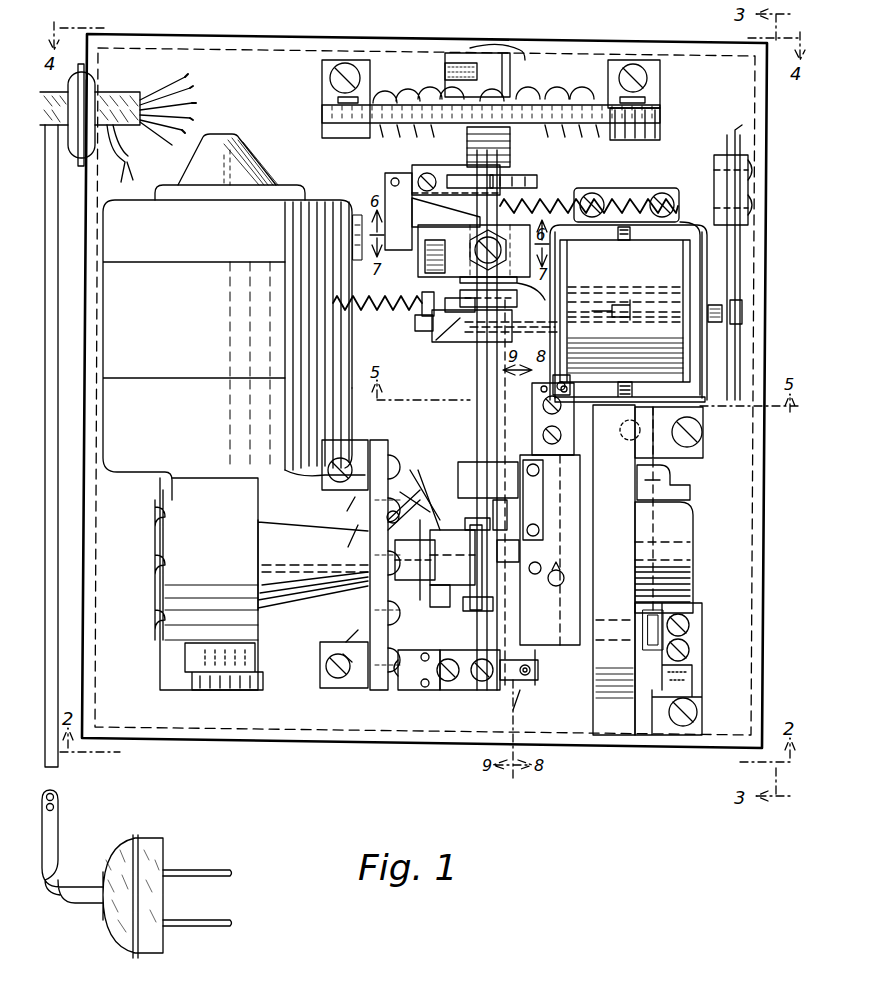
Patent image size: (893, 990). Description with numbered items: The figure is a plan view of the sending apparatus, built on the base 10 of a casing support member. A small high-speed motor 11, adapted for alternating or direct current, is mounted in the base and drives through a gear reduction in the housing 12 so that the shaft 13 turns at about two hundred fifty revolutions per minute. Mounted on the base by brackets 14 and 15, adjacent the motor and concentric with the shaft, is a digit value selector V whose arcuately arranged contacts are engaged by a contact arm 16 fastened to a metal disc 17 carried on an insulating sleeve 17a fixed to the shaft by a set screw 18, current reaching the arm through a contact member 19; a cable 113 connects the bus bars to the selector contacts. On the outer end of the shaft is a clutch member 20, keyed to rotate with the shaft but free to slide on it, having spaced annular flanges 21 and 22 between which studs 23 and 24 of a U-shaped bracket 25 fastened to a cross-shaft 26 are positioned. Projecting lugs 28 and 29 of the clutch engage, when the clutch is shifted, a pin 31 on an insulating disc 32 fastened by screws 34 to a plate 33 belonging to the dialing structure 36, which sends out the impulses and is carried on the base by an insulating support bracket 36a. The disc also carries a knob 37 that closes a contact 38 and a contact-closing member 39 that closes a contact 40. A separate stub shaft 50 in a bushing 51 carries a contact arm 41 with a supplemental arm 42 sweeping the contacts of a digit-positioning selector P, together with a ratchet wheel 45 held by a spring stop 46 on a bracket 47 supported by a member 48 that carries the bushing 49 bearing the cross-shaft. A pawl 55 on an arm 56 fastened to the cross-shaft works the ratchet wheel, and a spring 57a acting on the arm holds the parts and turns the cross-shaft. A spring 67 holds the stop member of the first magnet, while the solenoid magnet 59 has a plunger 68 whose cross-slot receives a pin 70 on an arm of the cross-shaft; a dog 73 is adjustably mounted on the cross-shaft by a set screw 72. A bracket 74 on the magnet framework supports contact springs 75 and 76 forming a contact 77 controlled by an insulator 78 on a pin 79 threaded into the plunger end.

The base 10 is at (183, 720).
The motor 11 is at (157, 465).
The housing 12 is at (258, 552).
The shaft 13 is at (432, 535).
The bracket 14 is at (320, 652).
The bracket 15 is at (385, 515).
The contact arm 16 is at (400, 495).
The metal disc 17 is at (440, 495).
The insulating sleeve 17a is at (418, 505).
The set screw 18 is at (420, 605).
The contact member 19 is at (388, 524).
The clutch member 20 is at (445, 545).
The annular flange 21 is at (450, 605).
The annular flange 22 is at (500, 620).
The stud 23 is at (478, 610).
The stud 24 is at (470, 525).
The U-shaped bracket 25 is at (465, 600).
The cross-shaft 26 is at (475, 390).
The projecting lug 28 is at (548, 668).
The projecting lug 29 is at (508, 551).
The pin 31 is at (532, 561).
The disc 32 is at (555, 565).
The plate 33 is at (565, 500).
The screws 34 is at (532, 475).
The dialing structure 36 is at (595, 700).
The insulating support bracket 36a is at (675, 728).
The knob 37 is at (560, 590).
The contact 38 is at (535, 540).
The contact-closing member 39 is at (541, 674).
The contact 40 is at (525, 680).
The contact arm 41 is at (498, 85).
The supplemental arm 42 is at (550, 95).
The ratchet wheel 45 is at (537, 178).
The spring stop 46 is at (400, 172).
The bracket 47 is at (390, 200).
The member 48 is at (425, 265).
The bushing 49 is at (502, 292).
The stub shaft 50 is at (515, 48).
The bushing 51 is at (512, 155).
The pawl 55 is at (448, 170).
The arm 56 is at (445, 210).
The spring 57a is at (555, 198).
The solenoid magnet 59 is at (635, 275).
The spring 67 is at (378, 312).
The solenoid plunger 68 is at (540, 326).
The pin 70 is at (440, 330).
The set screw 72 is at (465, 342).
The dog 73 is at (452, 342).
The bracket 74 is at (714, 198).
The contact spring 75 is at (727, 135).
The contact spring 76 is at (740, 130).
The contact 77 is at (736, 324).
The insulator 78 is at (715, 305).
The pin 79 is at (618, 305).
The cable 113 is at (118, 98).
The digit-positioning selector P is at (660, 115).
The digit value selector V is at (382, 450).